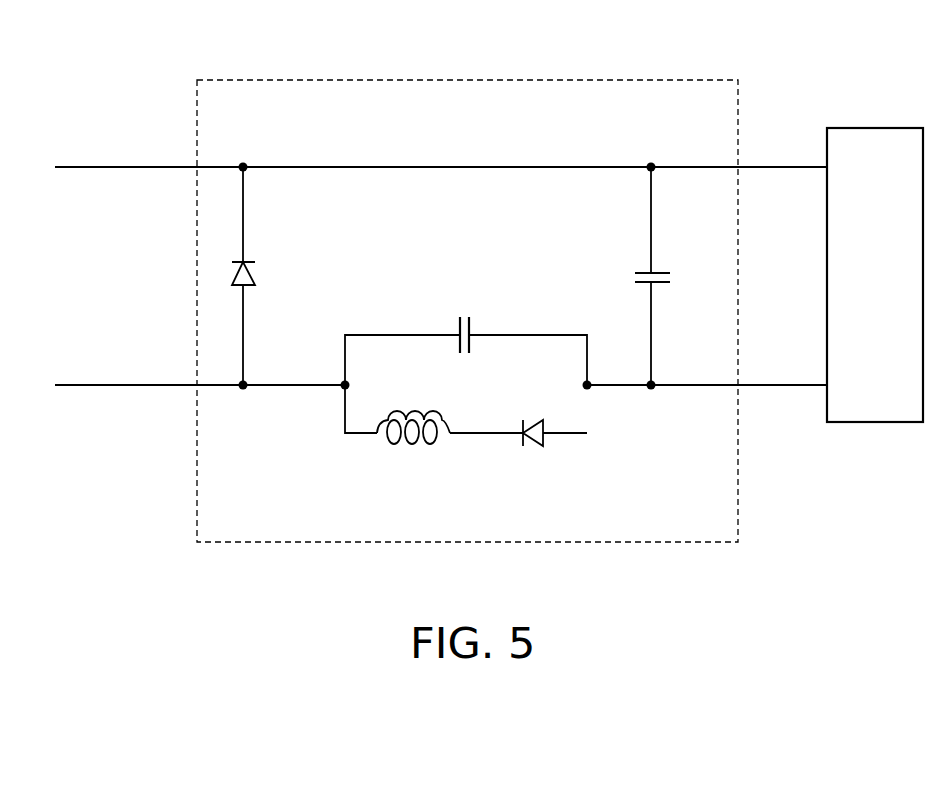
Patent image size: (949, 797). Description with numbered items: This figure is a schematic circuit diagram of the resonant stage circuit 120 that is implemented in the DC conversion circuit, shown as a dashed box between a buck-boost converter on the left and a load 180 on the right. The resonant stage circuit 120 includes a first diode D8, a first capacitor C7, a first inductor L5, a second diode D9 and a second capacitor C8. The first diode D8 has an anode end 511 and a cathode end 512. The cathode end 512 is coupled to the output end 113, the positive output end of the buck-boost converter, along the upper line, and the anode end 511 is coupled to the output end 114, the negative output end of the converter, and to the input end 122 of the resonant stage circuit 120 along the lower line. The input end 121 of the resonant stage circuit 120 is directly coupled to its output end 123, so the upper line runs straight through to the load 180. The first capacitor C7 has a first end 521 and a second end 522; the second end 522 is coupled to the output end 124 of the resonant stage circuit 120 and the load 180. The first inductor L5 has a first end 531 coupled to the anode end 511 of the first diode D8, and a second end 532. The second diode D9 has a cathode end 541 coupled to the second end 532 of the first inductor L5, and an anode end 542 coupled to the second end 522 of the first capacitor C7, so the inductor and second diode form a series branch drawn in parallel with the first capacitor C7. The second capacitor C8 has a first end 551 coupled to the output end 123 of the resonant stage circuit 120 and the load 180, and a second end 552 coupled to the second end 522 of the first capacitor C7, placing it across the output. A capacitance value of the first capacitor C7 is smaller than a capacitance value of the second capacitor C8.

The resonant stage circuit 120 is at (602, 78).
The output end 113 is at (95, 167).
The output end 114 is at (100, 387).
The input end 121 is at (163, 167).
The input end 122 is at (158, 387).
The output end 123 is at (776, 165).
The output end 124 is at (774, 387).
The load 180 is at (874, 127).
The anode end 511 is at (243, 325).
The cathode end 512 is at (243, 229).
The first end 521 is at (420, 333).
The second end 522 is at (507, 333).
The first end 531 is at (360, 435).
The second end 532 is at (458, 435).
The cathode end 541 is at (503, 435).
The anode end 542 is at (568, 435).
The first end 551 is at (652, 245).
The second end 552 is at (652, 323).
The first diode D8 is at (261, 275).
The second diode D9 is at (529, 420).
The first capacitor C7 is at (465, 321).
The second capacitor C8 is at (669, 281).
The first inductor L5 is at (413, 419).